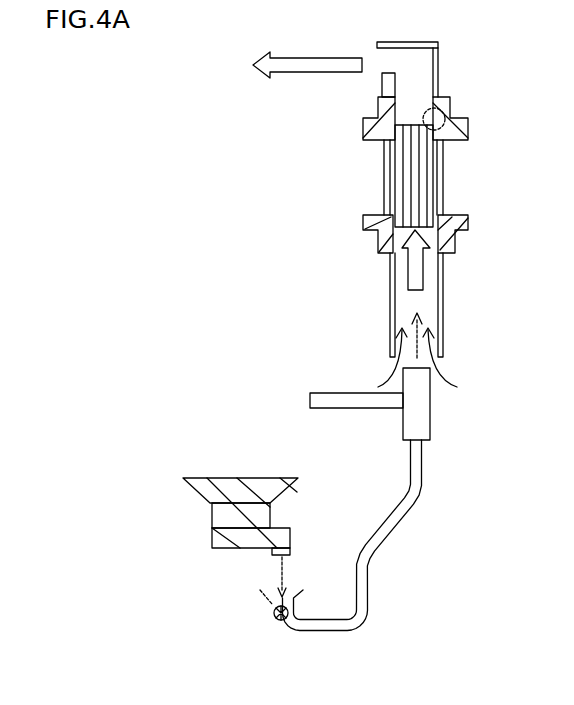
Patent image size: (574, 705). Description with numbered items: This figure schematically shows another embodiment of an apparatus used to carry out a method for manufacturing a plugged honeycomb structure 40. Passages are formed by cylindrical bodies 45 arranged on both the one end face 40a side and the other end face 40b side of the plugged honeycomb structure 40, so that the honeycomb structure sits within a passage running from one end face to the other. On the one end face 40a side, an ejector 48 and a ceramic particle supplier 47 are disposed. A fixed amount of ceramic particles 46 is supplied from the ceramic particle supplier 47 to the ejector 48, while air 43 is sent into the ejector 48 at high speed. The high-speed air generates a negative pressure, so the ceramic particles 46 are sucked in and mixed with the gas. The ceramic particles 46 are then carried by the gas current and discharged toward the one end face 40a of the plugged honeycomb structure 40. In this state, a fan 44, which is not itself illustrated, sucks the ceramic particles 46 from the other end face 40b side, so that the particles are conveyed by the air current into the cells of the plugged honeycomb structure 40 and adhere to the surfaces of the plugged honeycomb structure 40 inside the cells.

The plugged honeycomb structure 40 is at (440, 175).
The one end face 40a is at (453, 245).
The other end face 40b is at (450, 112).
The air 43 is at (362, 378).
The fan 44 is at (289, 66).
The cylindrical body 45 is at (440, 62).
The ceramic particles 46 is at (276, 627).
The ceramic particle supplier 47 is at (228, 477).
The ejector 48 is at (432, 423).